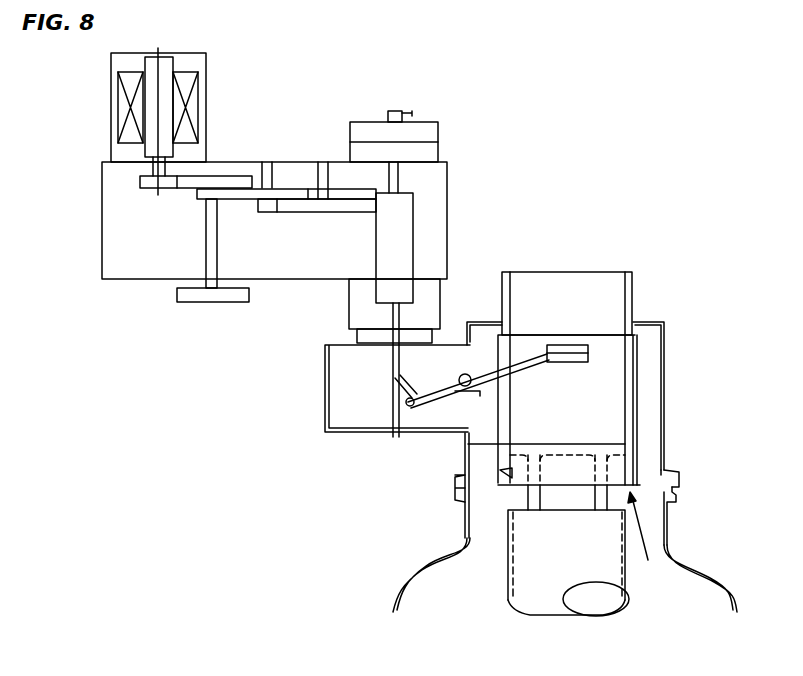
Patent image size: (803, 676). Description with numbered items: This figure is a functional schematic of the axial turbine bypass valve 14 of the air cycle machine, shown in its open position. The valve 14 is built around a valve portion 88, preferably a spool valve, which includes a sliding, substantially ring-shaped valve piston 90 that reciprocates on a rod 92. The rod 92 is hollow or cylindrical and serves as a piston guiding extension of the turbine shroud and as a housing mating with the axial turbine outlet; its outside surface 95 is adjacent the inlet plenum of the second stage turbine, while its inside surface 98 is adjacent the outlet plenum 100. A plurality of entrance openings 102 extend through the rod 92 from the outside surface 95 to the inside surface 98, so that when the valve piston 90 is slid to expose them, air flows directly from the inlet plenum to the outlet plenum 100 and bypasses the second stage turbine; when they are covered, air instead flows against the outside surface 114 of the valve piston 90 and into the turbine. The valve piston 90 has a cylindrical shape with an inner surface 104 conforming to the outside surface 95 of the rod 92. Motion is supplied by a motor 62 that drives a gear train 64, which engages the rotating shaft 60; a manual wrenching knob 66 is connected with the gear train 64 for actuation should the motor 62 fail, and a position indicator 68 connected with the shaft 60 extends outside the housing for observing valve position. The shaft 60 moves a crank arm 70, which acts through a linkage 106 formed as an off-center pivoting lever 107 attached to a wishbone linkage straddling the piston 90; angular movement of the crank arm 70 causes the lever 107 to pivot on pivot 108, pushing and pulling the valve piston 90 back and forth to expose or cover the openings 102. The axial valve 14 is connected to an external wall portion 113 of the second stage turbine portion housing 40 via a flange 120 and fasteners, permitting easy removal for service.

The axial turbine bypass valve 14 is at (593, 256).
The second stage turbine portion housing 40 is at (692, 560).
The rotating shaft 60 is at (392, 363).
The motor 62 is at (206, 103).
The gear train 64 is at (283, 167).
The manual wrenching knob 66 is at (187, 303).
The position indicator 68 is at (408, 111).
The crank arm 70 is at (405, 395).
The valve portion 88 is at (637, 322).
The valve piston 90 is at (613, 378).
The rod 92 is at (607, 573).
The outside surface 95 is at (626, 585).
The inside surface 98 is at (512, 290).
The outlet plenum 100 is at (600, 295).
The entrance openings 102 is at (517, 498).
The inner surface 104 is at (517, 487).
The linkage 106 is at (470, 405).
The lever 107 is at (408, 425).
The pivot 108 is at (463, 373).
The external wall portion 113 is at (677, 496).
The outside surface 114 is at (638, 417).
The flange 120 is at (669, 474).